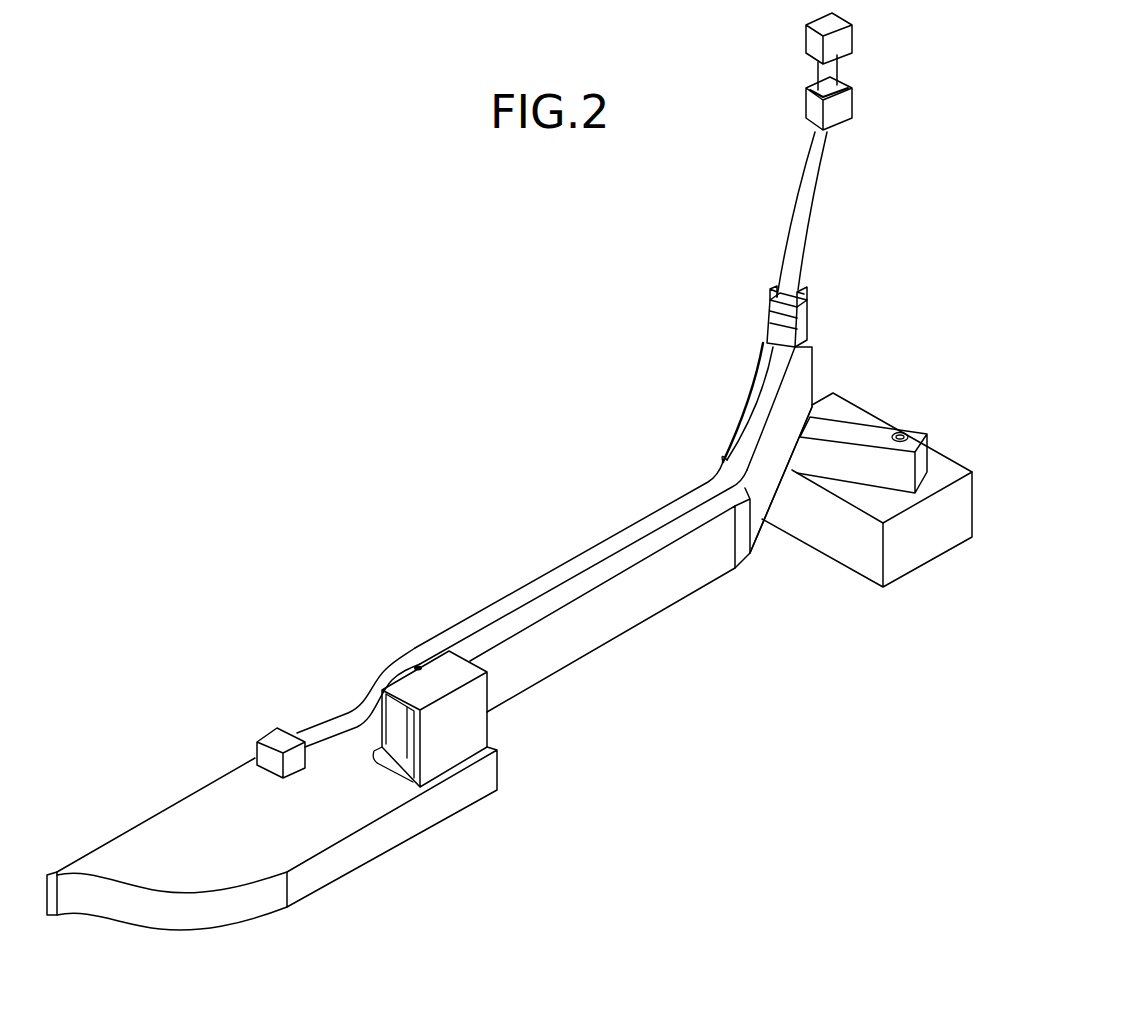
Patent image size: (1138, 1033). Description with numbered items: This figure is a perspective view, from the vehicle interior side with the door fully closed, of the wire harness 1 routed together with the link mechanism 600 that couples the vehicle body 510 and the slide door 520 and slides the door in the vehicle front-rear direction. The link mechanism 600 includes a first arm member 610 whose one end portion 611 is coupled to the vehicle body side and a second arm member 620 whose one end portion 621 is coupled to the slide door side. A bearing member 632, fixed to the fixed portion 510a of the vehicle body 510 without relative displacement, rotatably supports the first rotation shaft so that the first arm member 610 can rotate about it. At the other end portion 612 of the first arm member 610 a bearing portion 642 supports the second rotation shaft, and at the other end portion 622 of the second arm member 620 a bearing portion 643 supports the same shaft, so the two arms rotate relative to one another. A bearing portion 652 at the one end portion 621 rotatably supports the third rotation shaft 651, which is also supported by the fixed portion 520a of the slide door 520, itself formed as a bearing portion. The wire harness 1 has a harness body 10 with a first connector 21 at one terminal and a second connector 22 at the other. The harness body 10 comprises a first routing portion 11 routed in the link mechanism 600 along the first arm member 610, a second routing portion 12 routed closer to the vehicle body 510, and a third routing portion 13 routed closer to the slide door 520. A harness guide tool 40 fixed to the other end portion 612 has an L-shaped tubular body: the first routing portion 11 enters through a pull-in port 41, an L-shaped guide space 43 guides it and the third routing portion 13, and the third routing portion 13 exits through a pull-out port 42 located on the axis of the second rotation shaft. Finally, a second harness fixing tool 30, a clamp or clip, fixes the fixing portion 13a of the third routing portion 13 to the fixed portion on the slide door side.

The wire harness 1 is at (530, 406).
The harness body 10 is at (522, 531).
The first routing portion 11 is at (578, 558).
The second routing portion 12 is at (325, 718).
The third routing portion 13 is at (815, 132).
The fixing portion 13a is at (769, 287).
The first connector 21 is at (282, 740).
The second connector 22 is at (840, 43).
The second harness fixing tool 30 is at (840, 108).
The harness guide tool 40 is at (803, 317).
The pull-in port 41 is at (767, 353).
The pull-out port 42 is at (800, 290).
The guide space 43 is at (777, 297).
The vehicle body 510 is at (152, 837).
The fixed portion 510a is at (272, 835).
The slide door 520 is at (930, 535).
The fixed portion 520a is at (938, 503).
The link mechanism 600 is at (730, 648).
The first arm member 610 is at (654, 654).
The one end portion 611 is at (388, 718).
The other end portion 612 is at (810, 382).
The second arm member 620 is at (946, 430).
The one end portion 621 is at (915, 440).
The other end portion 622 is at (798, 455).
The bearing member 632 is at (457, 740).
The bearing portion 642 is at (878, 435).
The bearing portion 643 is at (819, 516).
The third rotation shaft 651 is at (900, 433).
The bearing portion 652 is at (923, 428).